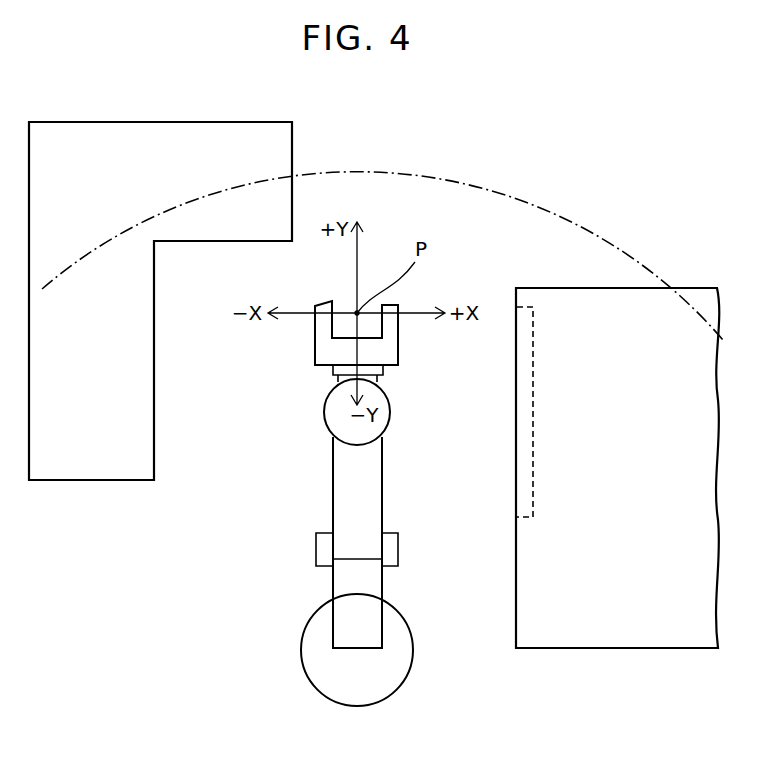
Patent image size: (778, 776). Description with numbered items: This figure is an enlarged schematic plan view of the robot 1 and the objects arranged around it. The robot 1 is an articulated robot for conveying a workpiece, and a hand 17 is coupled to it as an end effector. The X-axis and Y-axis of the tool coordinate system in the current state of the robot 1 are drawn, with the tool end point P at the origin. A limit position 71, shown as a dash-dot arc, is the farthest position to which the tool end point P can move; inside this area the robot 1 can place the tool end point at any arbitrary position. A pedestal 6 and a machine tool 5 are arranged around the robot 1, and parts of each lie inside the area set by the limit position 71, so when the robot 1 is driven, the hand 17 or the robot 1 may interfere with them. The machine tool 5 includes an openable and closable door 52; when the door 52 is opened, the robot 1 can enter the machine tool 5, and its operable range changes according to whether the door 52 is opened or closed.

The robot 1 is at (347, 497).
The machine tool 5 is at (637, 648).
The pedestal 6 is at (100, 470).
The hand 17 is at (388, 350).
The door 52 is at (533, 343).
The limit position 71 is at (503, 192).